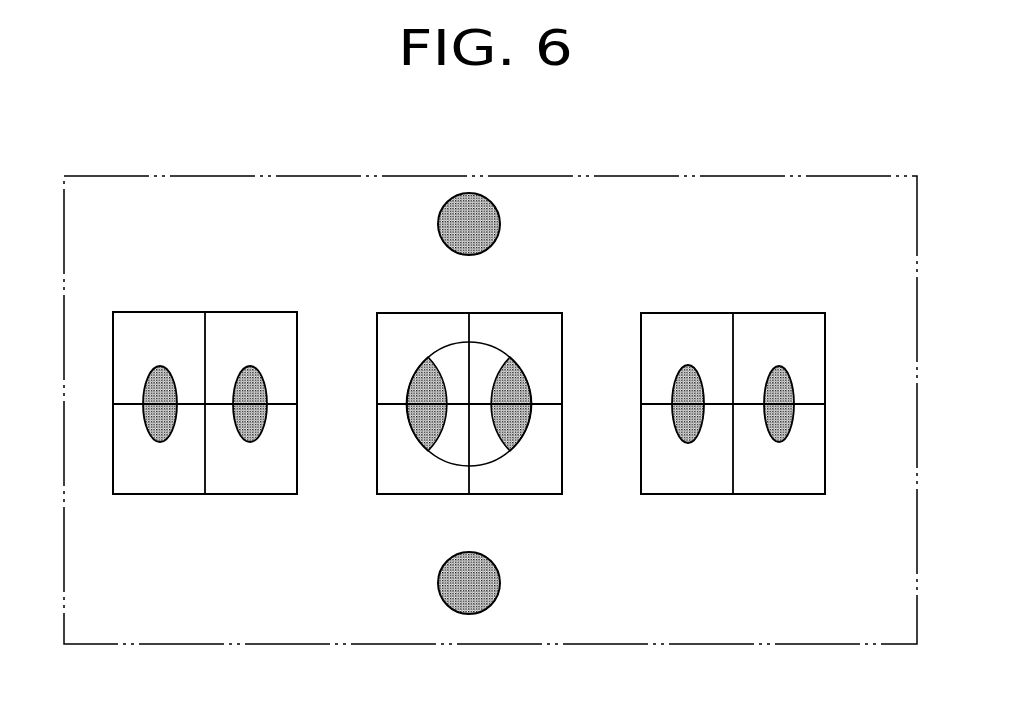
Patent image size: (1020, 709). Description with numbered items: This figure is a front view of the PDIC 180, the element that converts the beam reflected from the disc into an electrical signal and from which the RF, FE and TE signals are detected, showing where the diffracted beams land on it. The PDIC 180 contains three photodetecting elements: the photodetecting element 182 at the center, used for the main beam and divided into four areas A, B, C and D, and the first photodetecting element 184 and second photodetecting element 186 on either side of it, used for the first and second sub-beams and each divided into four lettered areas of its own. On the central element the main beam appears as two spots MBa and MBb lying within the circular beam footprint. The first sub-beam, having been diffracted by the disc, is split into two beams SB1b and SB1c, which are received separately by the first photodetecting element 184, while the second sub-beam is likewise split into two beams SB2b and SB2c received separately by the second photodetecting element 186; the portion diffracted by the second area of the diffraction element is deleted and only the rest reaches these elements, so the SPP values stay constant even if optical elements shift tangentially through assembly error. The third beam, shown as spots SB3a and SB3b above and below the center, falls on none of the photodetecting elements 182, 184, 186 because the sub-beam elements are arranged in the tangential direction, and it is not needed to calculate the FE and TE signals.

The PDIC 180 is at (500, 146).
The photodetecting element 182 is at (422, 495).
The first photodetecting element 184 is at (186, 495).
The second photodetecting element 186 is at (717, 495).
The first sub-beam split beam SB1b is at (163, 378).
The first sub-beam split beam SB1c is at (259, 389).
The second sub-beam split beam SB2b is at (691, 376).
The second sub-beam split beam SB2c is at (788, 392).
The third sub beam spot SB3a is at (501, 581).
The third sub beam spot SB3b is at (501, 222).
The main beam spot MBa is at (488, 355).
The main beam spot MBb is at (430, 372).